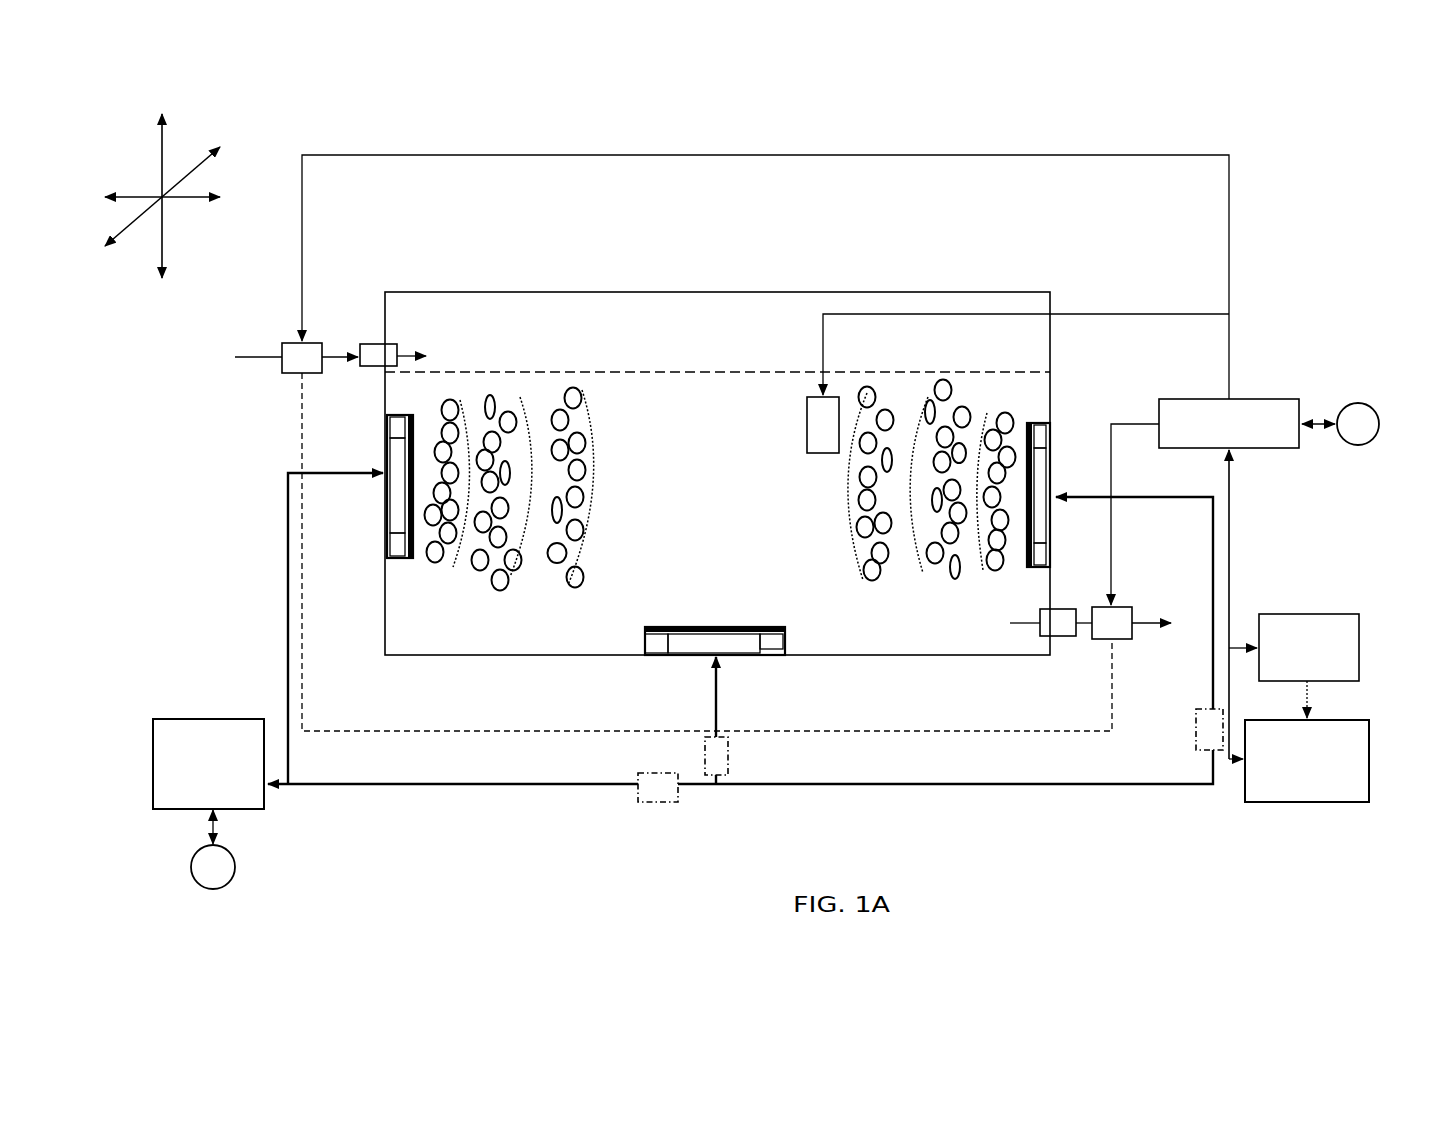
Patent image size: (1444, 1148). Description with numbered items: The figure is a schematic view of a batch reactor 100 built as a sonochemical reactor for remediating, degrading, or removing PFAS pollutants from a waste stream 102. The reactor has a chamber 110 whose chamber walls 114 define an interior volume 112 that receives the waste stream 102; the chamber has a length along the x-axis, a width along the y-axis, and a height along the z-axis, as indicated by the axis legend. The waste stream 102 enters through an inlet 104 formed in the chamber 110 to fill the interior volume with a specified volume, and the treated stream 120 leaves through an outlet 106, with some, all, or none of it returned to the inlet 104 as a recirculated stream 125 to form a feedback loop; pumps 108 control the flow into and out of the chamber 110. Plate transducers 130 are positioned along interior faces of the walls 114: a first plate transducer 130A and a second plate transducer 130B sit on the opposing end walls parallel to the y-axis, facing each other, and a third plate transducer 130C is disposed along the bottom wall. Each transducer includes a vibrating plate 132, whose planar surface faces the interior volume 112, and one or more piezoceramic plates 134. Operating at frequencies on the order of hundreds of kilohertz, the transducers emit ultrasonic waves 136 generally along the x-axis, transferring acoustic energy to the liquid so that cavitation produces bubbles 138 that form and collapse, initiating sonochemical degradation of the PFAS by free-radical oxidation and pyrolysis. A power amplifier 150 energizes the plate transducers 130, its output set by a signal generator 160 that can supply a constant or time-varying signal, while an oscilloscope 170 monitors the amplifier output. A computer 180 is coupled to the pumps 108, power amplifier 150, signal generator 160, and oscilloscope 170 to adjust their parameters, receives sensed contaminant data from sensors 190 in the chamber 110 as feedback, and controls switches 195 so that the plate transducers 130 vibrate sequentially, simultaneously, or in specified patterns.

The batch reactor 100 is at (770, 486).
The waste stream 102 is at (263, 357).
The inlet 104 is at (377, 370).
The outlet 106 is at (1057, 609).
The pumps 108 is at (290, 340).
The chamber 110 is at (733, 453).
The interior volume 112 is at (733, 475).
The chamber walls 114 is at (635, 293).
The treated stream 120 is at (1135, 620).
The recirculated stream 125 is at (903, 730).
The plate transducers 130 is at (681, 549).
The first plate transducer 130A is at (368, 542).
The second plate transducer 130B is at (1055, 488).
The third plate transducer 130C is at (733, 645).
The vibrating plate 132 is at (410, 556).
The piezoceramic plates 134 is at (387, 558).
The ultrasonic waves 136 is at (987, 410).
The bubbles 138 is at (961, 385).
The power amplifier 150 is at (1362, 703).
The signal generator 160 is at (1359, 595).
The oscilloscope 170 is at (224, 708).
The computer 180 is at (1256, 401).
The sensors 190 is at (812, 388).
The switches 195 is at (703, 768).